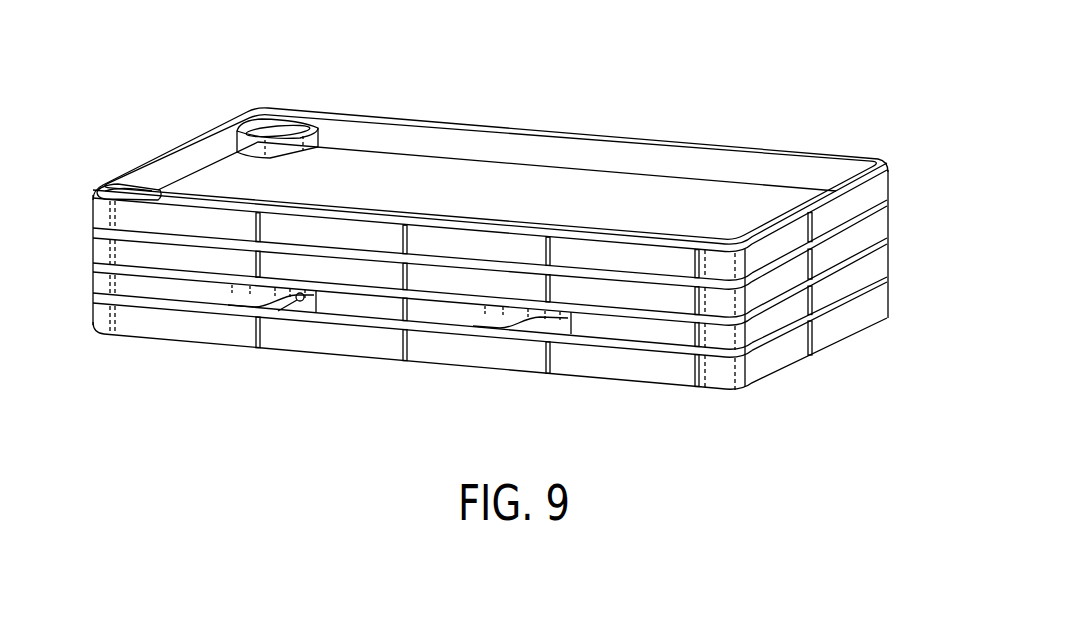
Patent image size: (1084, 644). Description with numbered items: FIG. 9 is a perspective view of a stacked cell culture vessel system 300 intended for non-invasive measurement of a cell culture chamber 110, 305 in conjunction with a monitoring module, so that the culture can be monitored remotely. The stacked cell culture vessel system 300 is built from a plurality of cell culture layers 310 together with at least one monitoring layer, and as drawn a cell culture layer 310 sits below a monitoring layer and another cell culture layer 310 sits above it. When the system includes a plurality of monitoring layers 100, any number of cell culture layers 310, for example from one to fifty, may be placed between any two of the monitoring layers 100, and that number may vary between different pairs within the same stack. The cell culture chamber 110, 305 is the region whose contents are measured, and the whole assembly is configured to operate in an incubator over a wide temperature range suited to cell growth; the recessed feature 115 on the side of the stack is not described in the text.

The container assembly 300 is at (132, 95).
The container body 100 is at (890, 258).
The reinforcing band 305 is at (130, 242).
The reinforcing rail 310 is at (890, 223).
The middle band 110 is at (130, 277).
The handle recess 115 is at (307, 320).